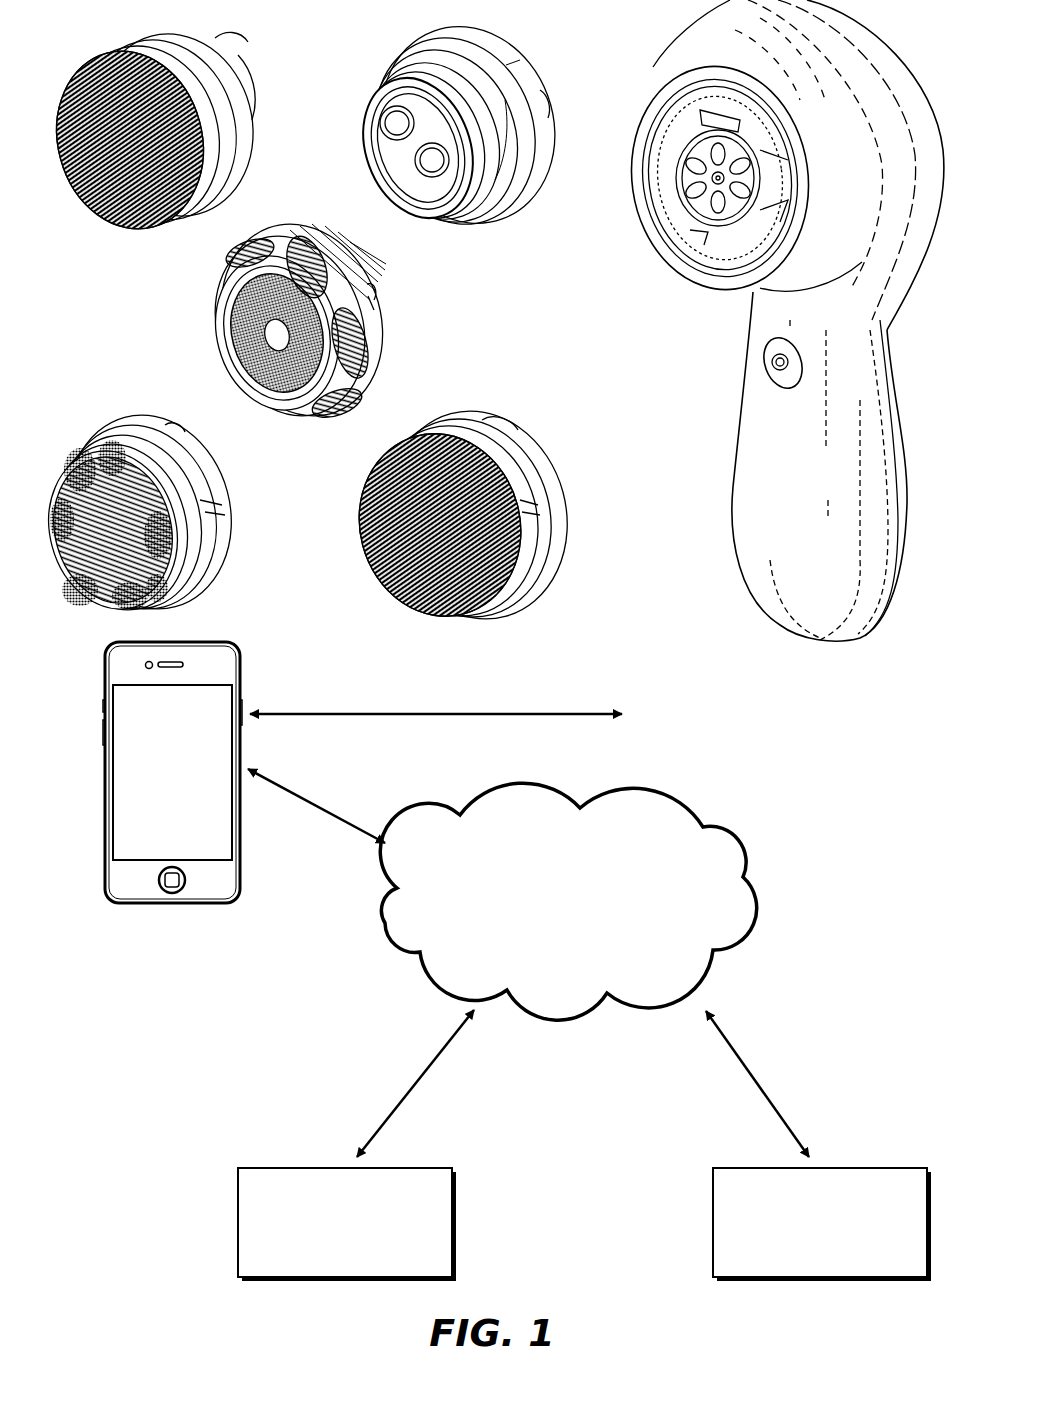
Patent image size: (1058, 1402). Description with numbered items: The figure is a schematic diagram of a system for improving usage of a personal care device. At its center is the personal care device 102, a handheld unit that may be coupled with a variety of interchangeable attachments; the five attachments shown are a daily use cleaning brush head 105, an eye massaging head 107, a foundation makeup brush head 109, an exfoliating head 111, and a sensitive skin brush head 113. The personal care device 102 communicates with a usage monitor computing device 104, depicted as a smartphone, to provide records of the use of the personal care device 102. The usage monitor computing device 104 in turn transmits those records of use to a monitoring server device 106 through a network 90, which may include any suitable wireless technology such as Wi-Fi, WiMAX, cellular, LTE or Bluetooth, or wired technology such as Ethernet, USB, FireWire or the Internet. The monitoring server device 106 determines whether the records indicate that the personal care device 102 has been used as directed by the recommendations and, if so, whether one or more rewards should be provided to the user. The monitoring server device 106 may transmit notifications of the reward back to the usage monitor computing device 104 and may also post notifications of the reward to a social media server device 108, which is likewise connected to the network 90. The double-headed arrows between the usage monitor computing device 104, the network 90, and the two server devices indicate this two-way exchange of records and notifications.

The network 90 is at (383, 923).
The personal care device 102 is at (888, 648).
The usage monitor computing device 104 is at (162, 903).
The daily use cleaning brush head 105 is at (242, 113).
The monitoring server device 106 is at (280, 1278).
The eye massaging head 107 is at (520, 202).
The social media server device 108 is at (880, 1278).
The foundation makeup brush head 109 is at (393, 347).
The exfoliating head 111 is at (230, 505).
The sensitive skin brush head 113 is at (527, 593).